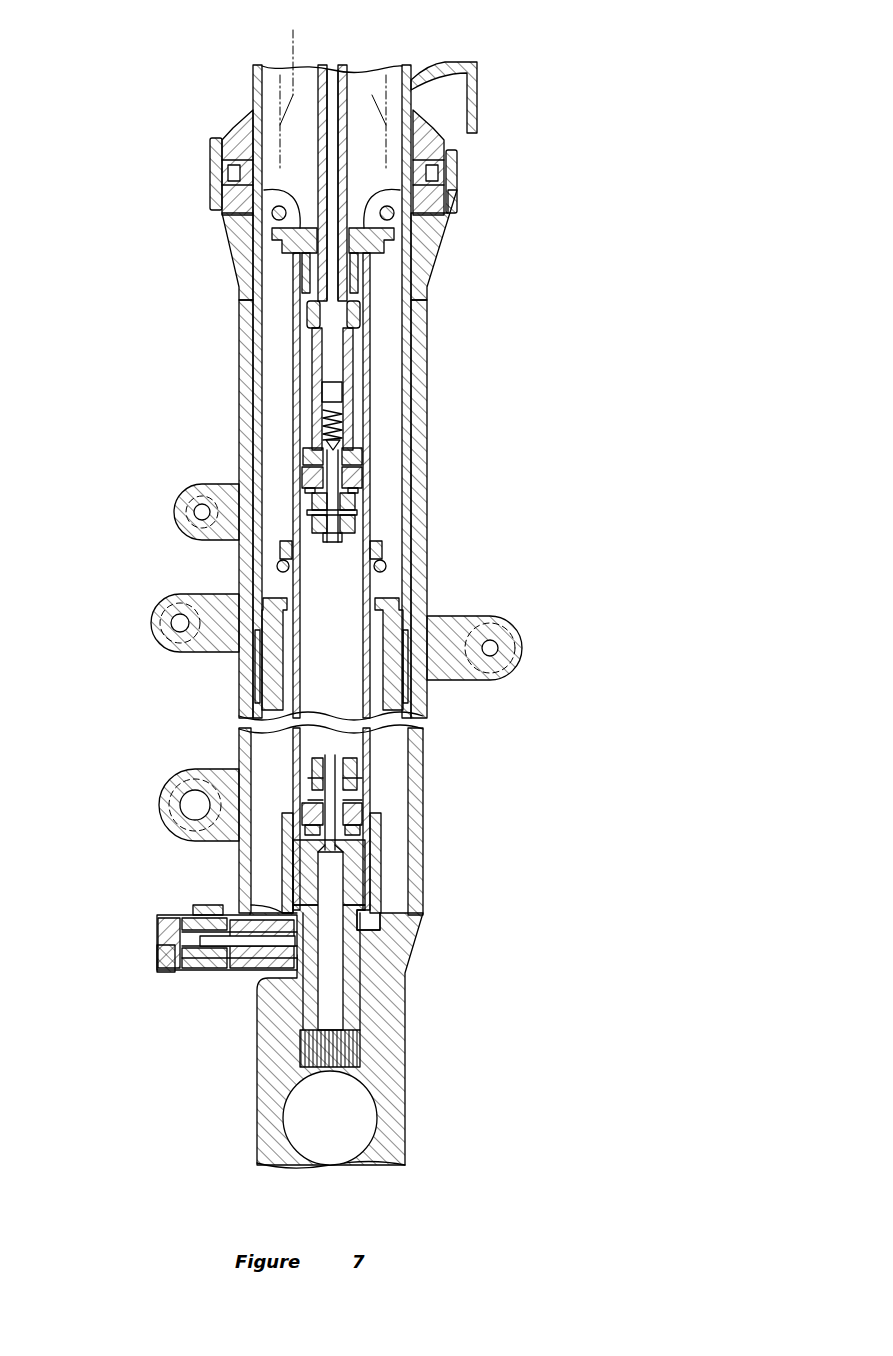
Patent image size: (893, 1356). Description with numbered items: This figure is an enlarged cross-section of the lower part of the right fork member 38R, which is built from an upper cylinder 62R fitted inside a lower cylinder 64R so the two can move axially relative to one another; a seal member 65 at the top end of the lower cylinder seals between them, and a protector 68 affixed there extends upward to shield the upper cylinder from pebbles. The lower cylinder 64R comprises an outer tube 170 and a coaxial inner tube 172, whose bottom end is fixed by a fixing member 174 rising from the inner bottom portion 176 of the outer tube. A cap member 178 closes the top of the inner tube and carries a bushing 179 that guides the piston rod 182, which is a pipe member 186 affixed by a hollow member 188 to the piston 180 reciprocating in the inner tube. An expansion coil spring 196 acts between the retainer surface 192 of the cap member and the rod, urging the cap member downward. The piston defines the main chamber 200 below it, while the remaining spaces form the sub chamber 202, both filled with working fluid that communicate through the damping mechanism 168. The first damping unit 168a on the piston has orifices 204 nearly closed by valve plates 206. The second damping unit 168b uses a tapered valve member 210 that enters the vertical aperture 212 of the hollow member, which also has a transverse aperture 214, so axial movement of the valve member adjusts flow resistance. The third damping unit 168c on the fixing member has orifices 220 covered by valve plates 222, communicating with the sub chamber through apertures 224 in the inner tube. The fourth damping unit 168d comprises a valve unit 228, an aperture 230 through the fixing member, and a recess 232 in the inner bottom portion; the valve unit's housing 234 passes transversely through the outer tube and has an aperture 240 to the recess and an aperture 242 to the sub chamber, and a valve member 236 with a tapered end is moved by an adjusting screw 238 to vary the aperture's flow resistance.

The expansion coil spring 196 is at (330, 88).
The piston rod 182 is at (350, 92).
The upper cylinder 62R is at (253, 90).
The seal member 65 is at (232, 128).
The fork member 38R is at (175, 165).
The protector 68 is at (480, 83).
The pipe member 186 is at (350, 134).
The retainer surface 192 is at (283, 190).
The bushing 179 is at (395, 207).
The lower cylinder 64R is at (217, 270).
The cap member 178 is at (385, 247).
The outer tube 170 is at (240, 292).
The hollow member 188 is at (315, 387).
The inner tube 172 is at (370, 353).
The valve member 210 is at (330, 423).
The aperture 214 is at (345, 430).
The second damping unit 168b is at (287, 442).
The damping mechanism 168 is at (380, 444).
The valve plates 206 is at (355, 462).
The orifices 204 is at (358, 484).
The first damping unit 168a is at (519, 456).
The aperture 212 is at (330, 546).
The piston 180 is at (355, 505).
The main chamber 200 is at (346, 626).
The sub chamber 202 is at (268, 760).
The apertures 224 is at (293, 845).
The valve plates 222 is at (355, 792).
The orifices 220 is at (372, 812).
The third damping unit 168c is at (519, 768).
The aperture 242 is at (280, 895).
The valve unit 228 is at (168, 907).
The fixing member 174 is at (350, 872).
The aperture 230 is at (335, 892).
The inner bottom portion 176 is at (348, 905).
The adjusting screw 238 is at (157, 948).
The housing 234 is at (172, 968).
The valve member 236 is at (255, 962).
The aperture 240 is at (280, 965).
The recess 232 is at (303, 960).
The fourth damping unit 168d is at (297, 985).